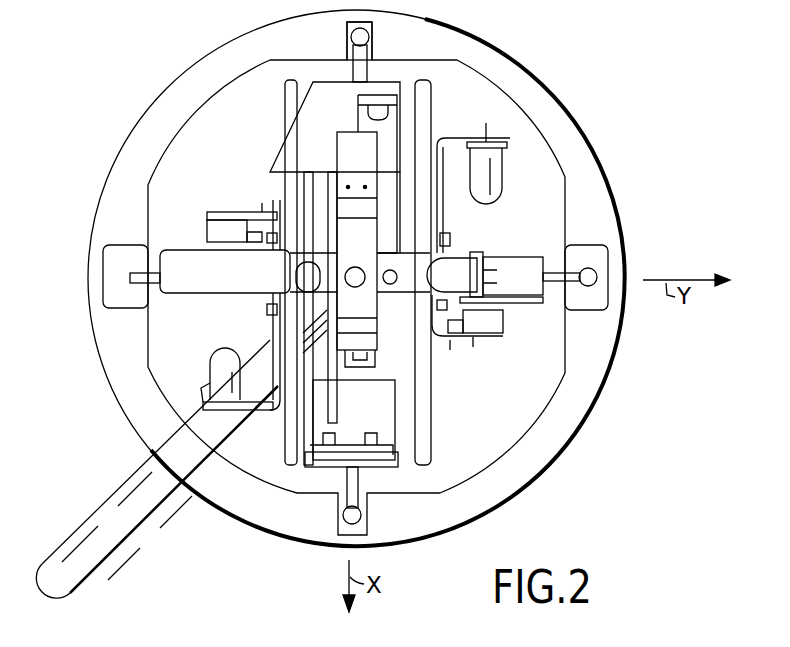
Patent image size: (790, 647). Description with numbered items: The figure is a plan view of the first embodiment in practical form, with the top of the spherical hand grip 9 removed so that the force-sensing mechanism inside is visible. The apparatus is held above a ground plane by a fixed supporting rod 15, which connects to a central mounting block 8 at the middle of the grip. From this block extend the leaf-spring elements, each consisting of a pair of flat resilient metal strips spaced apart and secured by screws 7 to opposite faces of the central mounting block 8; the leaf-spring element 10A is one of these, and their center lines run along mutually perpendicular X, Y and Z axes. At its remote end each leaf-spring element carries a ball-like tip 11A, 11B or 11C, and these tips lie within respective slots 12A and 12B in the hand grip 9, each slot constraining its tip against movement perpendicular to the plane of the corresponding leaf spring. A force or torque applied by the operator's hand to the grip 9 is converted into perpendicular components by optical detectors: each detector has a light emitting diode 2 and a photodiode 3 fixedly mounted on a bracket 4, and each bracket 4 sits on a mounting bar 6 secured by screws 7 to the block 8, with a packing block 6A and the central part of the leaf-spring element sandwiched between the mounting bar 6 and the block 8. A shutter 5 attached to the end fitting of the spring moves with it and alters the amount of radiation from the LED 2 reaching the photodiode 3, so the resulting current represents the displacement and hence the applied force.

The light emitting diode 2 is at (500, 168).
The photodiode 3 is at (290, 281).
The bracket 4 is at (227, 210).
The shutter 5 is at (326, 137).
The mounting bar 6 is at (293, 98).
The packing block 6A is at (410, 238).
The screws 7 is at (267, 312).
The central mounting block 8 is at (383, 240).
The hand grip 9 is at (582, 140).
The leaf-spring element 10A is at (397, 355).
The ball-like tip 11A is at (368, 36).
The ball-like tip 11B is at (586, 270).
The ball-like tip 11C is at (352, 268).
The slot 12A is at (347, 33).
The slot 12B is at (103, 286).
The supporting rod 15 is at (110, 500).